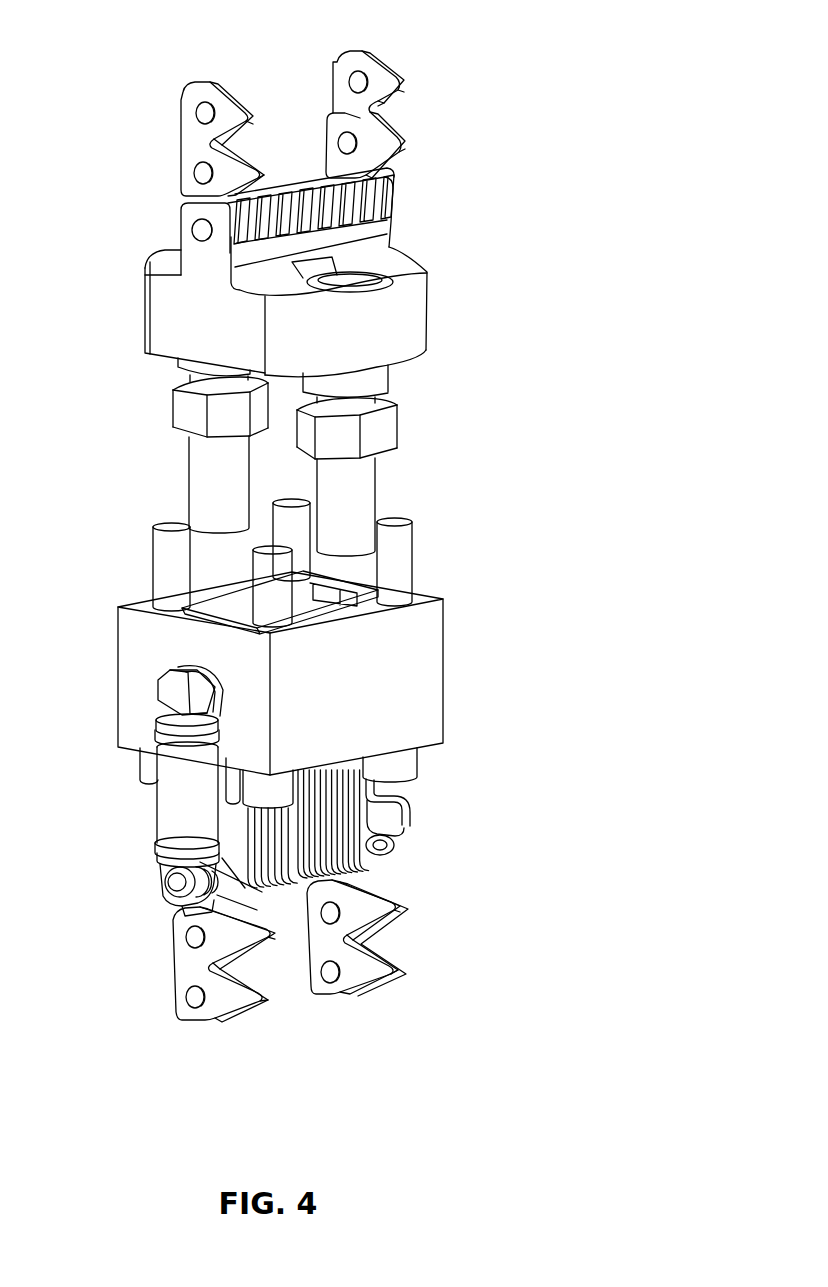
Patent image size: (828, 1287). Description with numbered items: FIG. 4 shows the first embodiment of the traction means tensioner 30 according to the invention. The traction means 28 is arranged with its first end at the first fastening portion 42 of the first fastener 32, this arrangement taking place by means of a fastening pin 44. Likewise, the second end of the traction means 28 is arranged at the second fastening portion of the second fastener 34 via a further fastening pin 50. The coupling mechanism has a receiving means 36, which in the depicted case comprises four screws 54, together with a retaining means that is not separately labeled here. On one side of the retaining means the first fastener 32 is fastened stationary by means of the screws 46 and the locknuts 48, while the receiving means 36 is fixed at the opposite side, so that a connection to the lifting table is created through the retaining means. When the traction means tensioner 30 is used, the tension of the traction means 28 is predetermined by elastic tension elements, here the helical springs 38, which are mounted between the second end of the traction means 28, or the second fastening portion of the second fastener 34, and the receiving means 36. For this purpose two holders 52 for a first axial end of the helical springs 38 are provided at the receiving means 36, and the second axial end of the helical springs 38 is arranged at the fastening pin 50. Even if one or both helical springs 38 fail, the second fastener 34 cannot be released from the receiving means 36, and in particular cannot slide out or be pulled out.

The traction means 28 is at (195, 97).
The traction means tensioner 30 is at (696, 71).
The first fastener 32 is at (165, 318).
The second fastener 34 is at (335, 843).
The receiving means 36 is at (418, 650).
The helical springs 38 is at (175, 802).
The first fastening portion 42 is at (197, 255).
The fastening pin 44 is at (198, 228).
The screws 46 is at (200, 488).
The locknuts 48 is at (190, 412).
The fastening pin 50 is at (172, 883).
The holders 52 is at (170, 682).
The screws 54 is at (165, 570).